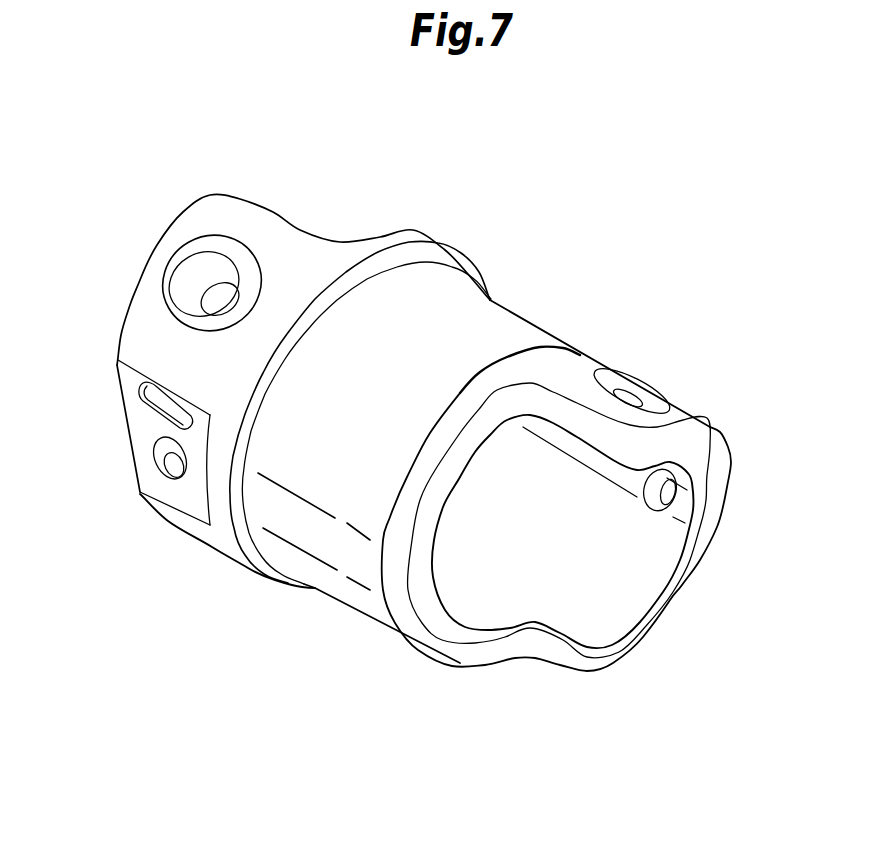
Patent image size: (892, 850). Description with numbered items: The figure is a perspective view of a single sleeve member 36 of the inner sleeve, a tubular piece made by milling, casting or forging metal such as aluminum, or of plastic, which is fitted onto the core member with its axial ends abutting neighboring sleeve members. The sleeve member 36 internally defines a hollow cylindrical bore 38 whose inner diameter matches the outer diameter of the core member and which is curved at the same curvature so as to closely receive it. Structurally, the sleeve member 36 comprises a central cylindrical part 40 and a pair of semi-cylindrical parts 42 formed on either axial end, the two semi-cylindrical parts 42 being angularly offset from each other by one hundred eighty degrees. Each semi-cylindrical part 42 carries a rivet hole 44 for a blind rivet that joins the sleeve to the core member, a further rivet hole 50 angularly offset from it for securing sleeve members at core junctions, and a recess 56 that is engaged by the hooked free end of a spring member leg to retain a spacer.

The sleeve member 36 is at (420, 431).
The hollow cylindrical bore 38 is at (457, 570).
The cylindrical part 40 is at (498, 327).
The semi-cylindrical part 42 is at (389, 413).
The rivet hole 44 is at (173, 462).
The rivet hole 50 is at (224, 286).
The recess 56 is at (158, 397).